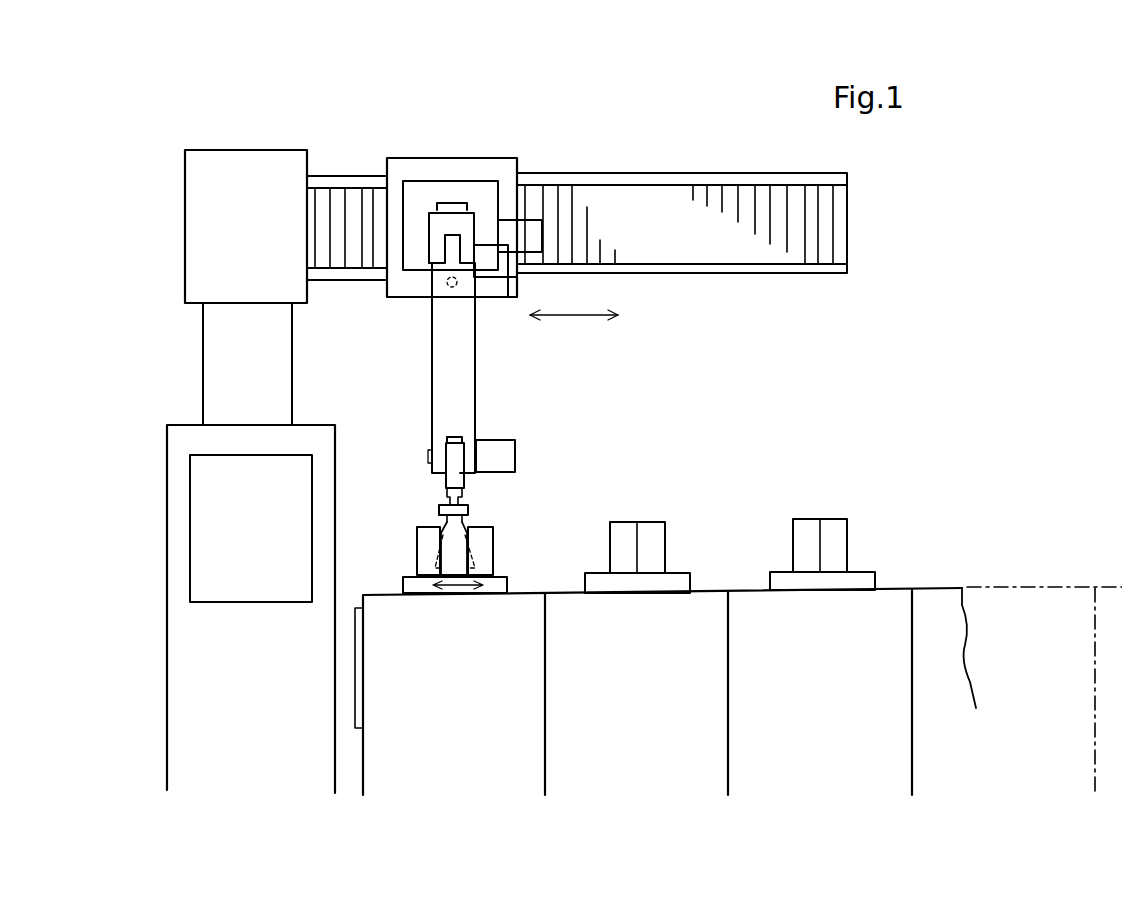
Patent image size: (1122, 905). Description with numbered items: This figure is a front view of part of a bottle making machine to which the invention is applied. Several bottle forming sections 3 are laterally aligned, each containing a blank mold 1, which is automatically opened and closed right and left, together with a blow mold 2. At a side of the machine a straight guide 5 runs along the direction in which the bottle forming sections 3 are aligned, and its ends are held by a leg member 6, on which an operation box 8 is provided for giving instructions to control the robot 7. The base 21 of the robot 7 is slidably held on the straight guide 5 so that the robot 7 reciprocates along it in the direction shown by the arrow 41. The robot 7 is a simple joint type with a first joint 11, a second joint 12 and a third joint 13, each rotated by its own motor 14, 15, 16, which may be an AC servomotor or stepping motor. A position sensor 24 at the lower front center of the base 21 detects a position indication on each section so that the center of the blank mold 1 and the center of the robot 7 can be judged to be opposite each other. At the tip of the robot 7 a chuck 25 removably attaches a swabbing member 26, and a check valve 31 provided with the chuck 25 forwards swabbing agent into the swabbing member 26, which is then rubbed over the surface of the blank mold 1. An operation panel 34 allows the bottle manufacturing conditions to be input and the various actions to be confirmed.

The blank mold 1 is at (488, 547).
The blow mold 2 is at (665, 532).
The bottle forming section 3 is at (472, 719).
The straight guide 5 is at (748, 172).
The leg member 6 is at (175, 455).
The robot 7 is at (428, 342).
The operation box 8 is at (251, 537).
The first joint 11 is at (450, 210).
The second joint 12 is at (437, 253).
The third joint 13 is at (448, 457).
The motor 14 is at (528, 237).
The motor 15 is at (502, 300).
The motor 16 is at (512, 450).
The base 21 is at (483, 168).
The position sensor 24 is at (455, 290).
The chuck 25 is at (468, 505).
The swabbing member 26 is at (436, 537).
The check valve 31 is at (447, 497).
The operation panel 34 is at (353, 667).
The arrow 41 is at (600, 318).